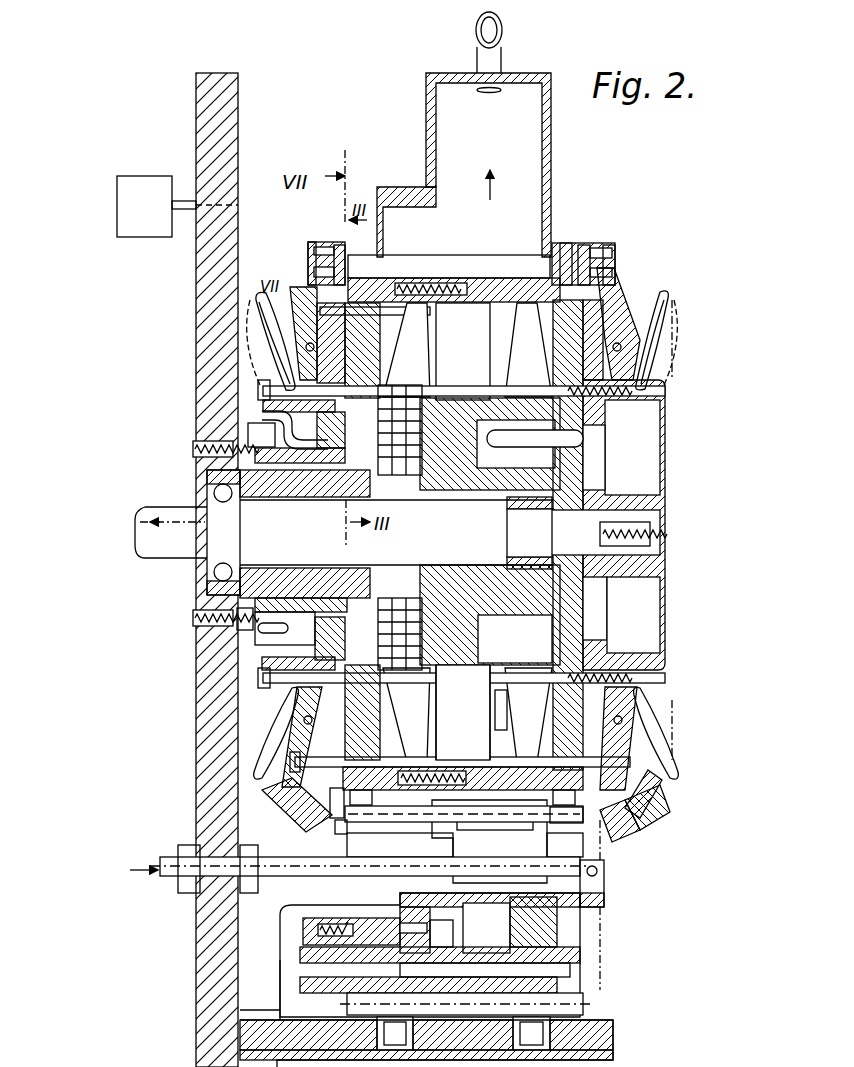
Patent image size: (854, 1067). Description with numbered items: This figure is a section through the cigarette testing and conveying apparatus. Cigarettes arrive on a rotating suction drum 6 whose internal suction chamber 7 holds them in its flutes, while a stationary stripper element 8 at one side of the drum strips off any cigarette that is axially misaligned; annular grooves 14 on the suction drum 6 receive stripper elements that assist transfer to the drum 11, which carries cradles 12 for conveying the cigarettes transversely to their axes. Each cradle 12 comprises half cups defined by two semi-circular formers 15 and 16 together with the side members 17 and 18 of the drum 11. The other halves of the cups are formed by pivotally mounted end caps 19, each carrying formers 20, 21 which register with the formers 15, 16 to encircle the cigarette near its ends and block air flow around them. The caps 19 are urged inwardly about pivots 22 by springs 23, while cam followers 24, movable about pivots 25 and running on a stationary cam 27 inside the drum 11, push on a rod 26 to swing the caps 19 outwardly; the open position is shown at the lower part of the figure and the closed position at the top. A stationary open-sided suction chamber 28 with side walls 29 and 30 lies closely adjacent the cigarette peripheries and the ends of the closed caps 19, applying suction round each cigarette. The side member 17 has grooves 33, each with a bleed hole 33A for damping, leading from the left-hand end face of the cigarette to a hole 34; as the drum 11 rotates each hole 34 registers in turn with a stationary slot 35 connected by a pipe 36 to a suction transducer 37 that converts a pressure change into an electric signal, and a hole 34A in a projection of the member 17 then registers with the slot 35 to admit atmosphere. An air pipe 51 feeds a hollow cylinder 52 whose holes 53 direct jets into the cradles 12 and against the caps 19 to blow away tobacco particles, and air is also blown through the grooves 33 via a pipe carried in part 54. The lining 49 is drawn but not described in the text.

The suction drum 6 is at (430, 982).
The internal suction chamber 7 is at (430, 955).
The stationary stripper element 8 is at (598, 892).
The drum 11 is at (668, 410).
The cradle 12 is at (467, 273).
The annular grooves 14 is at (387, 990).
The semi-circular former 15 is at (365, 257).
The semi-circular former 16 is at (335, 250).
The side member 17 is at (328, 325).
The side member 18 is at (603, 300).
The end cap 19 is at (270, 793).
The semi-circular former 20 is at (580, 257).
The semi-circular former 21 is at (568, 253).
The pivot 22 is at (306, 346).
The spring 23 is at (672, 748).
The cam follower 24 is at (522, 718).
The pivot 25 is at (530, 682).
The rod 26 is at (618, 763).
The stationary cam 27 is at (460, 668).
The suction chamber 28 is at (494, 72).
The side wall 29 is at (551, 140).
The side wall 30 is at (380, 213).
The groove 33 is at (352, 356).
The bleed hole 33A is at (306, 276).
The hole 34 is at (316, 440).
The hole 34A is at (303, 437).
The stationary slot 35 is at (275, 430).
The pipe 36 is at (226, 367).
The suction transducer 37 is at (139, 176).
The lining 49 is at (655, 812).
The air pipe 51 is at (165, 885).
The hollow cylinder 52 is at (348, 822).
The holes 53 is at (337, 823).
The part 54 is at (263, 643).